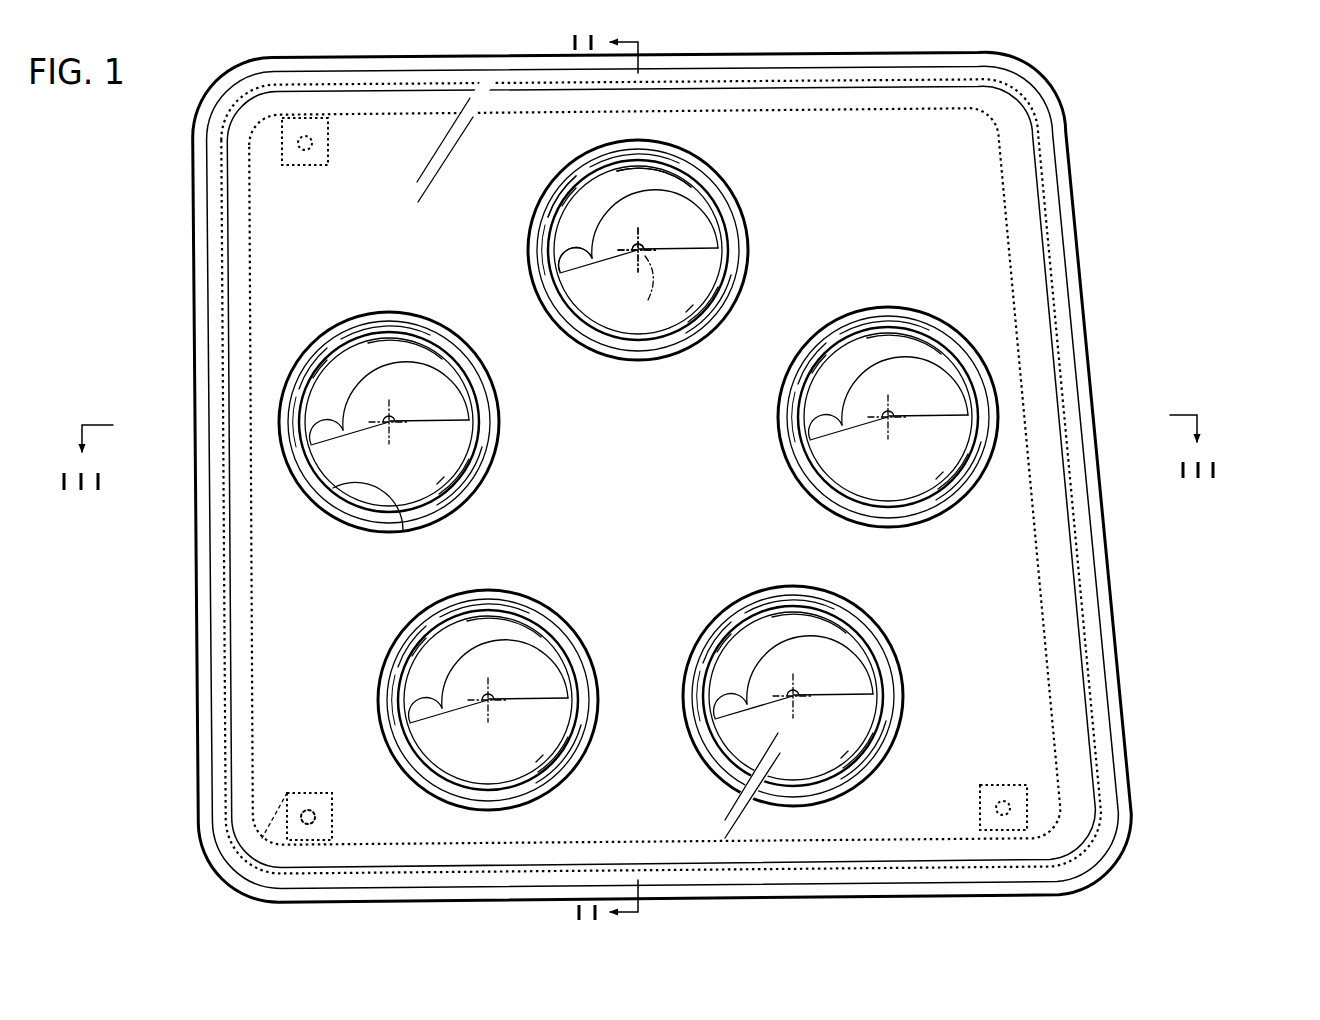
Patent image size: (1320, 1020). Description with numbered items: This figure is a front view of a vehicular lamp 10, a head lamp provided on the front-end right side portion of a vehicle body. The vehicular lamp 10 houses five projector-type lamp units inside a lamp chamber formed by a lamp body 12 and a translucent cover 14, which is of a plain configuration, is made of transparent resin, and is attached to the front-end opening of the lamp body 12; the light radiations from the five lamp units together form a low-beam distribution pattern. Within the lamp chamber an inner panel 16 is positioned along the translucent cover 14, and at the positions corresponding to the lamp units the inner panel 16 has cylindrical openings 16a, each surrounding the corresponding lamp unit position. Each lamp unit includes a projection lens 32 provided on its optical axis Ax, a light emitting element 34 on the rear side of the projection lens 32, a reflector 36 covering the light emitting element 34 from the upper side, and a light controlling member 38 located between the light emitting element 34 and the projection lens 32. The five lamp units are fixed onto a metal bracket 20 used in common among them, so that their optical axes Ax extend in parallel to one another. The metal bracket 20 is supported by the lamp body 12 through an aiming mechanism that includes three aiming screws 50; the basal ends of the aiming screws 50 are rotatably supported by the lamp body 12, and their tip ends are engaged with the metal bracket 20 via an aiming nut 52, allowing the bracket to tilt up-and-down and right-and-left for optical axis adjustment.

The vehicular lamp 10 is at (1143, 133).
The lamp body 12 is at (187, 222).
The translucent cover 14 is at (206, 325).
The inner panel 16 is at (1048, 245).
The opening 16a is at (333, 488).
The metal bracket 20 is at (1052, 626).
The projection lens 32 is at (583, 190).
The light emitting element 34 is at (657, 240).
The reflector 36 is at (663, 172).
The light controlling member 38 is at (563, 232).
The aiming screw 50 is at (303, 820).
The aiming nut 52 is at (287, 793).